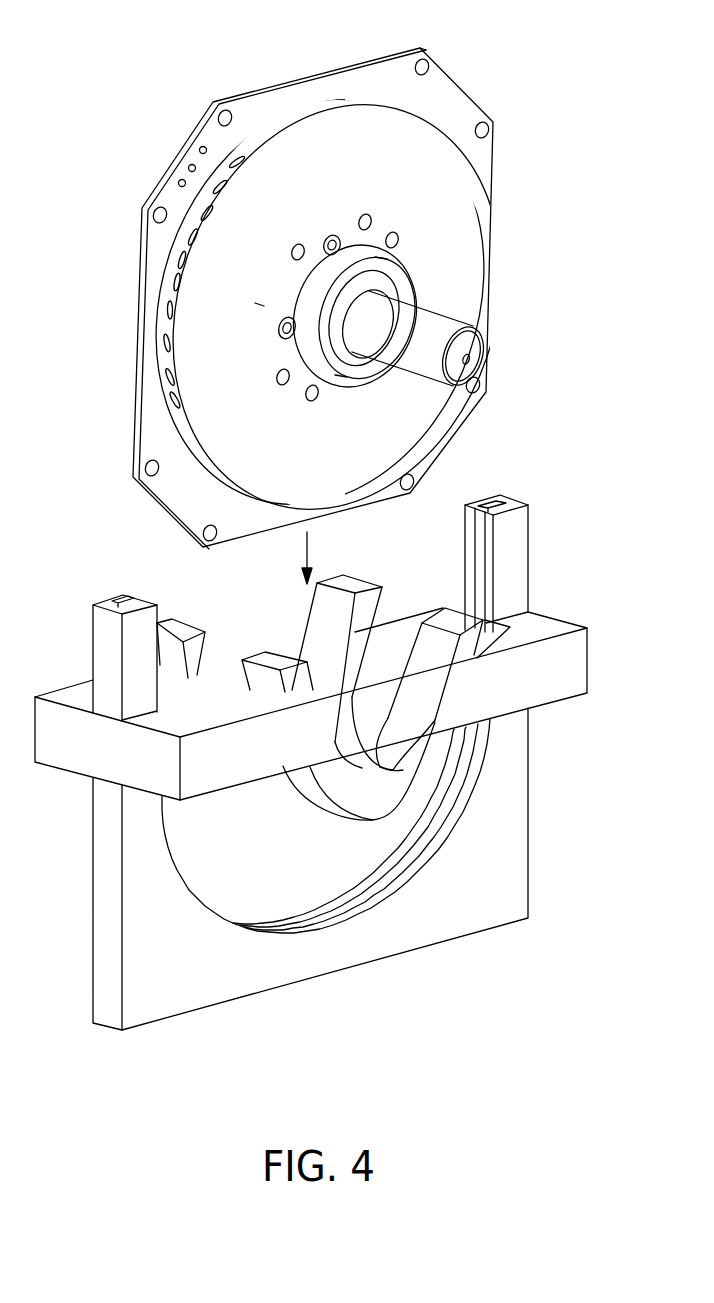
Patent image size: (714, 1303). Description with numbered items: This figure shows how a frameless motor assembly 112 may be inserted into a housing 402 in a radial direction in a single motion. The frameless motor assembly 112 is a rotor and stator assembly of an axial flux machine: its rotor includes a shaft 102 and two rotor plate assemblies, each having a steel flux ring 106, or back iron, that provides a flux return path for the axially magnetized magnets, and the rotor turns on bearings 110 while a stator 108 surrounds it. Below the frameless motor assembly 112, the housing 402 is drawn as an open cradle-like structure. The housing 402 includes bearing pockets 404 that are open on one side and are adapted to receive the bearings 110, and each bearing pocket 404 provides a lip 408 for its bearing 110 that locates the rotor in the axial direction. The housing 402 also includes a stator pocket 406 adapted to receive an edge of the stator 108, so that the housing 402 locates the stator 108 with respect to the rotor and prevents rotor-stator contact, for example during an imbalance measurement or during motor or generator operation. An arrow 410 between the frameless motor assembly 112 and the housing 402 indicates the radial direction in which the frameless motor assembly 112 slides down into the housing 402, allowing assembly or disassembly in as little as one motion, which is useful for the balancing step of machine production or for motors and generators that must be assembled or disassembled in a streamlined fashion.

The shaft 102 is at (435, 330).
The steel flux ring 106 is at (474, 230).
The stator 108 is at (457, 84).
The bearing 110 is at (393, 272).
The frameless motor assembly 112 is at (131, 136).
The housing 402 is at (598, 665).
The bearing pocket 404 is at (402, 730).
The stator pocket 406 is at (480, 555).
The lip 408 is at (413, 738).
The arrow 410 is at (310, 558).